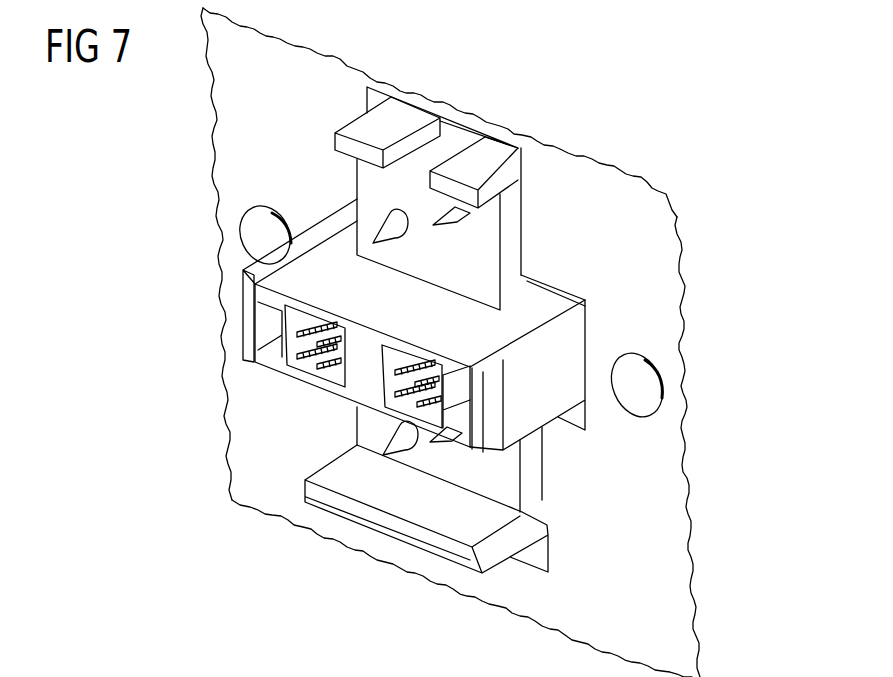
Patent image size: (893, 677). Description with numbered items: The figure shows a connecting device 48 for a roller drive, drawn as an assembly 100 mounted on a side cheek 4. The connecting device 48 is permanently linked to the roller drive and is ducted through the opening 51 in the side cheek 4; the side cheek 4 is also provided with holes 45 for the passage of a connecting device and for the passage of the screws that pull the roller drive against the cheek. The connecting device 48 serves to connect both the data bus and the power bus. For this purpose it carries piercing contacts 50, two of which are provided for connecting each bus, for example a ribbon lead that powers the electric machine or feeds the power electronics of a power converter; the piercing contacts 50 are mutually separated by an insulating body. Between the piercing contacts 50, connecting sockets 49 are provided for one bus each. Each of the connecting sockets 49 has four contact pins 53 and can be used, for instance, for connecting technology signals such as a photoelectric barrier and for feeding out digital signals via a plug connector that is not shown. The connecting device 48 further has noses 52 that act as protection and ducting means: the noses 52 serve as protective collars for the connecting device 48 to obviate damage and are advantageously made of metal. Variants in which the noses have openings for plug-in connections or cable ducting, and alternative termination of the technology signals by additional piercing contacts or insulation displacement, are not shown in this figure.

The connector assembly 100 is at (812, 32).
The side cheek 4 is at (665, 276).
The holes 45 is at (255, 241).
The connecting device 48 is at (325, 258).
The connecting sockets 49 is at (395, 362).
The piercing contacts 50 is at (395, 242).
The opening 51 is at (563, 292).
The noses 52 is at (407, 115).
The contact pins 53 is at (330, 368).